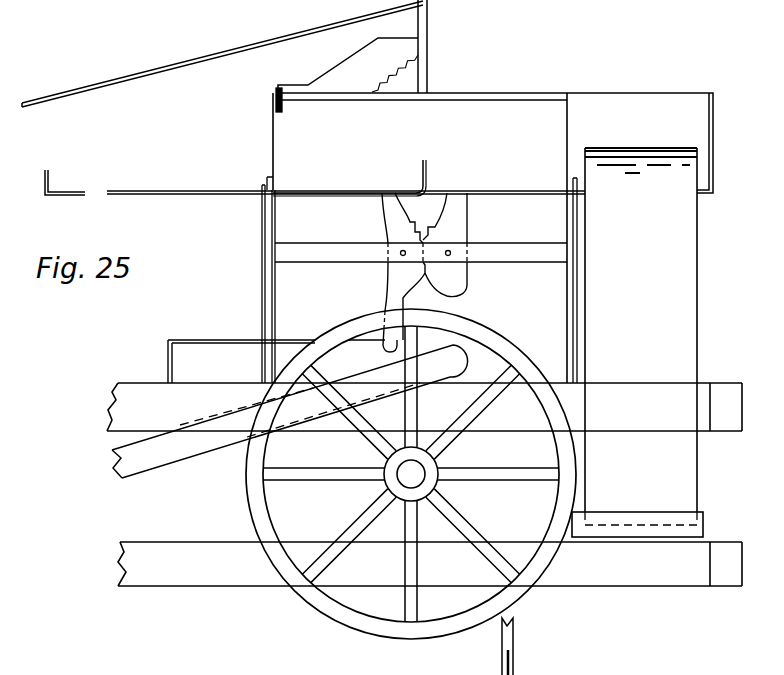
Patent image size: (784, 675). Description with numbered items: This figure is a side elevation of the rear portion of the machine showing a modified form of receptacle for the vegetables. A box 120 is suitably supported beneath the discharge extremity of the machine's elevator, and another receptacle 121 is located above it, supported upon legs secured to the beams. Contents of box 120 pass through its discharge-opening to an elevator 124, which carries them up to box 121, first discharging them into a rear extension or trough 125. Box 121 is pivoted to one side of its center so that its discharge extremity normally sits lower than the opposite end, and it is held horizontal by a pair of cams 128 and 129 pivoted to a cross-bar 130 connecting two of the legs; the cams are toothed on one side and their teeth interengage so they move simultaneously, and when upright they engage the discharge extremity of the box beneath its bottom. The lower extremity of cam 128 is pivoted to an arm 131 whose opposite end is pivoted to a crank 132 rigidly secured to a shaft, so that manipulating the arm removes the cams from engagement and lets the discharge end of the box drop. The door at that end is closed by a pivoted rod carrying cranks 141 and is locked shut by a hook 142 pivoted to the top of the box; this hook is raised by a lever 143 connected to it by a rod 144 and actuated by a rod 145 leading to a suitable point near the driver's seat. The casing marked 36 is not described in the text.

The casing 36 is at (410, 238).
The box 120 is at (411, 474).
The receptacle 121 is at (421, 114).
The elevator 124 is at (637, 342).
The rear extension or trough 125 is at (623, 148).
The cam 128 is at (392, 287).
The cam 129 is at (455, 225).
The cross-bar 130 is at (421, 252).
The arm 131 is at (289, 284).
The crank 132 is at (172, 362).
The cranks 141 is at (427, 175).
The hook 142 is at (542, 646).
The lever 143 is at (427, 41).
The rod 144 is at (343, 57).
The rod 145 is at (229, 48).